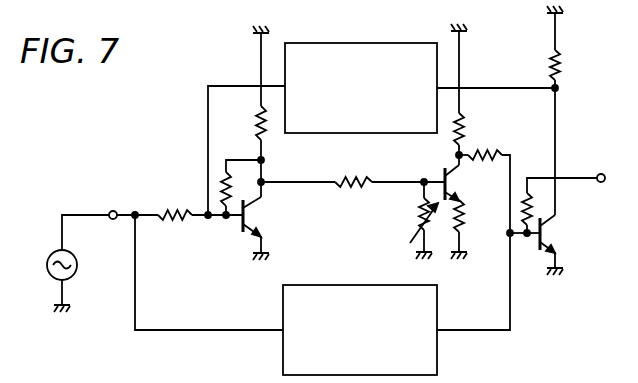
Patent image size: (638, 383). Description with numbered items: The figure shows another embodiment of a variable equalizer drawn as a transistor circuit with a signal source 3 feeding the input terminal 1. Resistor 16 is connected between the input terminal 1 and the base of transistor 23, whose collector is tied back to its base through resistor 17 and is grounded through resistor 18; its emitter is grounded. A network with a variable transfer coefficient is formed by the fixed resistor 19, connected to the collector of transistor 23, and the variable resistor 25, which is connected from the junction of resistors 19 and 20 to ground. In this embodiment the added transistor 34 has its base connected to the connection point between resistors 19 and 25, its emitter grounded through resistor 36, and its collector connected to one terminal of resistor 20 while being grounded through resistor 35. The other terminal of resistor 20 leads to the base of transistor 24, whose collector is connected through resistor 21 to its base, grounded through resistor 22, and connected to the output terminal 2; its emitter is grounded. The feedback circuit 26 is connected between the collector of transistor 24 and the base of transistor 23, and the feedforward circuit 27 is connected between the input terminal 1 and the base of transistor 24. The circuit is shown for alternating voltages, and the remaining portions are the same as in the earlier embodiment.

The input terminal 1 is at (114, 211).
The output terminal 2 is at (605, 178).
The signal source 3 is at (78, 265).
The fixed resistor 16 is at (172, 222).
The fixed resistor 17 is at (220, 185).
The fixed resistor 18 is at (256, 127).
The fixed resistor 19 is at (350, 188).
The fixed resistor 20 is at (497, 151).
The fixed resistor 21 is at (532, 205).
The fixed resistor 22 is at (560, 64).
The transistor 23 is at (240, 228).
The transistor 24 is at (548, 240).
The variable resistor 25 is at (420, 208).
The feedback circuit 26 is at (367, 43).
The feedforward circuit 27 is at (338, 285).
The transistor 34 is at (452, 185).
The fixed resistor 35 is at (465, 126).
The fixed resistor 36 is at (463, 227).